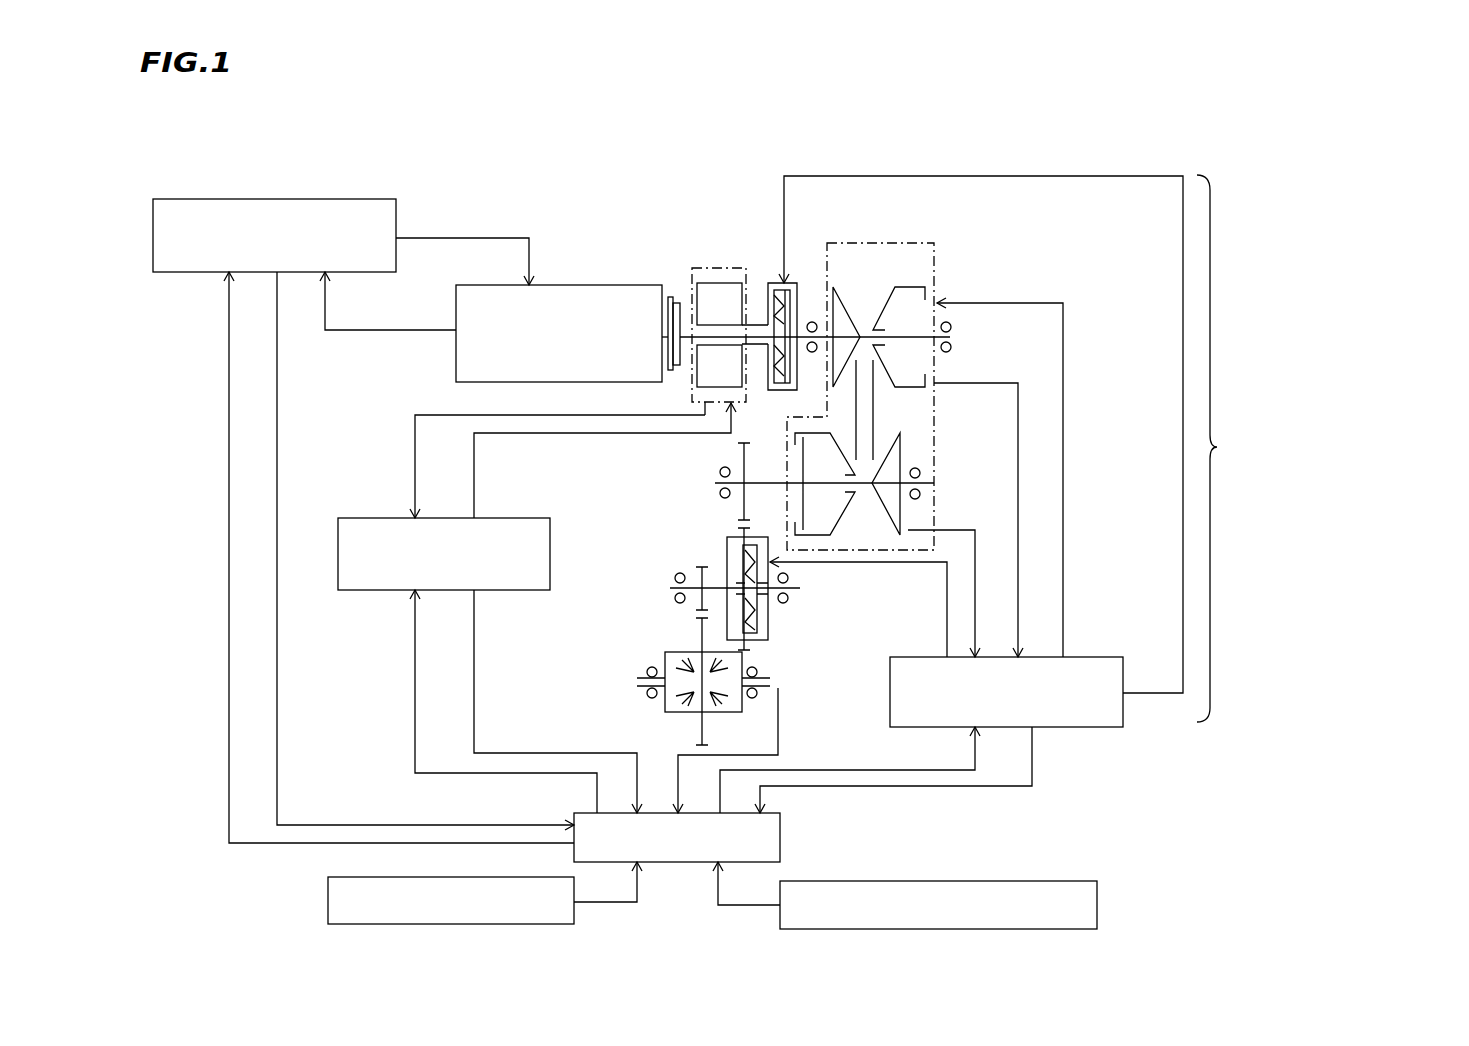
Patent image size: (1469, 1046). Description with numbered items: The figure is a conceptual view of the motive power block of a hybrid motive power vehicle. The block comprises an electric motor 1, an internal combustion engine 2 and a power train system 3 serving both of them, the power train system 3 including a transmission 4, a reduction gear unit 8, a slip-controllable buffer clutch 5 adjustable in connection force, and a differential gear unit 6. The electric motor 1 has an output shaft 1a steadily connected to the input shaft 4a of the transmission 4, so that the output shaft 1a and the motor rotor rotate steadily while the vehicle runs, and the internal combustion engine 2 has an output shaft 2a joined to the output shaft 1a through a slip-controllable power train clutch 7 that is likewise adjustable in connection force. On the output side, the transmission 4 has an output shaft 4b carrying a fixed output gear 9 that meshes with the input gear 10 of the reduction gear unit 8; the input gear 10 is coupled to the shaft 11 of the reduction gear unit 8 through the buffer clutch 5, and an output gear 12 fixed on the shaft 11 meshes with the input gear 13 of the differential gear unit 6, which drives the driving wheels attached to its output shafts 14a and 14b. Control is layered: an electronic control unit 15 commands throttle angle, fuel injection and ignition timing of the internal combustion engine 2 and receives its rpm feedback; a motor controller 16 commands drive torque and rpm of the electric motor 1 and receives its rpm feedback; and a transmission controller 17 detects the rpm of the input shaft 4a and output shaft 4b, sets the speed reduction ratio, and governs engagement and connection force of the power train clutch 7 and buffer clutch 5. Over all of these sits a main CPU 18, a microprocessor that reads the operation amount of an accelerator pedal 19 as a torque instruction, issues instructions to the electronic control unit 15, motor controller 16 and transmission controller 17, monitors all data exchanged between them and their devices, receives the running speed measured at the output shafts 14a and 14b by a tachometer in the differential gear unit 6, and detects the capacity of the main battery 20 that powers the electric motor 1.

The electric motor 1 is at (706, 292).
The output shaft 1a is at (757, 345).
The internal combustion engine 2 is at (456, 352).
The output shaft 2a is at (716, 341).
The power train system 3 is at (1318, 448).
The transmission 4 is at (885, 243).
The input shaft 4a is at (800, 300).
The output shaft 4b is at (768, 482).
The buffer clutch 5 is at (725, 548).
The differential gear unit 6 is at (668, 656).
The power train clutch 7 is at (773, 283).
The reduction gear unit 8 is at (812, 574).
The output gear 9 is at (740, 505).
The input gear 10 is at (757, 648).
The shaft 11 is at (702, 585).
The output gear 12 is at (700, 606).
The input gear 13 is at (700, 729).
The output shaft 14a is at (637, 682).
The output shaft 14b is at (770, 682).
The electronic control unit 15 is at (312, 199).
The motor controller 16 is at (367, 518).
The transmission controller 17 is at (1098, 730).
The main CPU 18 is at (782, 838).
The accelerator pedal 19 is at (1098, 905).
The main battery 20 is at (328, 897).